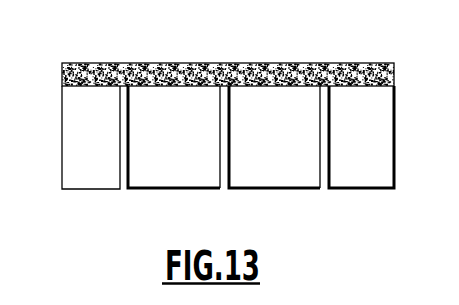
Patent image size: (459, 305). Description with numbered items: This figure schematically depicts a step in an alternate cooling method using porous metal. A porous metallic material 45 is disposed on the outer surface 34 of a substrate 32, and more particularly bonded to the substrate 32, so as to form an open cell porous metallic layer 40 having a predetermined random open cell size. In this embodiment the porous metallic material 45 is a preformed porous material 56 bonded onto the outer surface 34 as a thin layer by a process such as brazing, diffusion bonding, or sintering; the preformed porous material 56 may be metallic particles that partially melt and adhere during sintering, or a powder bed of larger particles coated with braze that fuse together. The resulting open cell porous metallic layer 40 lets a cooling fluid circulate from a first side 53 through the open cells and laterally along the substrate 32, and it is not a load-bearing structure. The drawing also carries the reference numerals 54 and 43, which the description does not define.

The substrate 32 is at (377, 150).
The outer surface 34 is at (234, 57).
The open cell porous metallic layer 40 is at (172, 78).
The gap 43 is at (223, 189).
The porous metallic material 45 is at (234, 57).
The first side 53 is at (212, 67).
The top surface 54 is at (228, 52).
The preformed porous material 56 is at (234, 52).